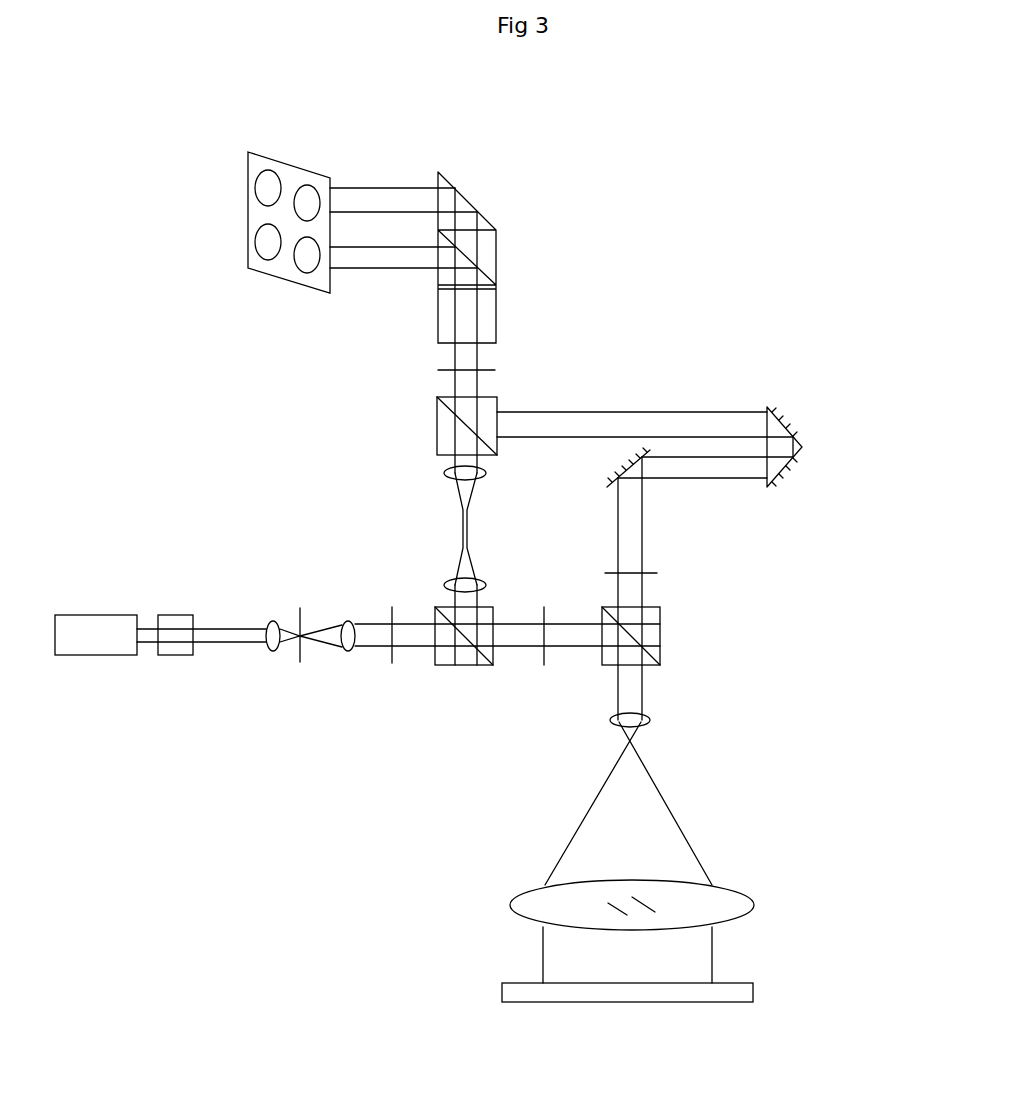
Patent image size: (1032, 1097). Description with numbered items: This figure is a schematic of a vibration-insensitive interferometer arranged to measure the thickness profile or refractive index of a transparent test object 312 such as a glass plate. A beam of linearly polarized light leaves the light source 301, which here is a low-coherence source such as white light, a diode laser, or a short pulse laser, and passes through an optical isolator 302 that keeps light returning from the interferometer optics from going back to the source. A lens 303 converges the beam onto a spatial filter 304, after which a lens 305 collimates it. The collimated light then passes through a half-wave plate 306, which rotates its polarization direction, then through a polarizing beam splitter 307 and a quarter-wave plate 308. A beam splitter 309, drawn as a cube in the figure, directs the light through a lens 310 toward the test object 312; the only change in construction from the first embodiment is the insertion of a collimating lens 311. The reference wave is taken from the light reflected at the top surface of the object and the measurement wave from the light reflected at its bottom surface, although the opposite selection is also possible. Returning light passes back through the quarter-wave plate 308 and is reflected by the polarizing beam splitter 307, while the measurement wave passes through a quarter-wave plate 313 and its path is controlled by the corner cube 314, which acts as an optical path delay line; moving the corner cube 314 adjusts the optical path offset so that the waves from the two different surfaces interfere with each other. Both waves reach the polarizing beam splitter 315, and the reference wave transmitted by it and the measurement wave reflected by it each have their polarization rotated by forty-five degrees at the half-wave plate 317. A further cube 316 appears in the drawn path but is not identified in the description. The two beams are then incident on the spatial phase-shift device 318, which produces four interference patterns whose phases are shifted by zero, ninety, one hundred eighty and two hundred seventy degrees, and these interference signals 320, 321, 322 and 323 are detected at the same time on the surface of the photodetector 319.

The light source 301 is at (95, 657).
The optical isolator 302 is at (175, 657).
The lens 303 is at (270, 651).
The spatial filter 304 is at (298, 598).
The lens 305 is at (345, 651).
The half-wave plate 306 is at (392, 600).
The polarizing beam splitter 307 is at (460, 667).
The quarter-wave plate 308 is at (544, 667).
The beam splitter 309 is at (660, 637).
The lens 310 is at (650, 720).
The collimating lens 311 is at (754, 905).
The transparent test object 312 is at (753, 995).
The quarter-wave plate 313 is at (663, 575).
The corner cube 314 is at (810, 448).
The polarizing beam splitter 315 is at (472, 527).
The beam splitter 316 is at (437, 427).
The half-wave plate 317 is at (505, 370).
The spatial phase-shift device 318 is at (477, 203).
The photodetector 319 is at (292, 280).
The interference signal 320 is at (250, 247).
The interference signal 321 is at (303, 278).
The interference signal 322 is at (272, 170).
The detector element 323 is at (307, 187).